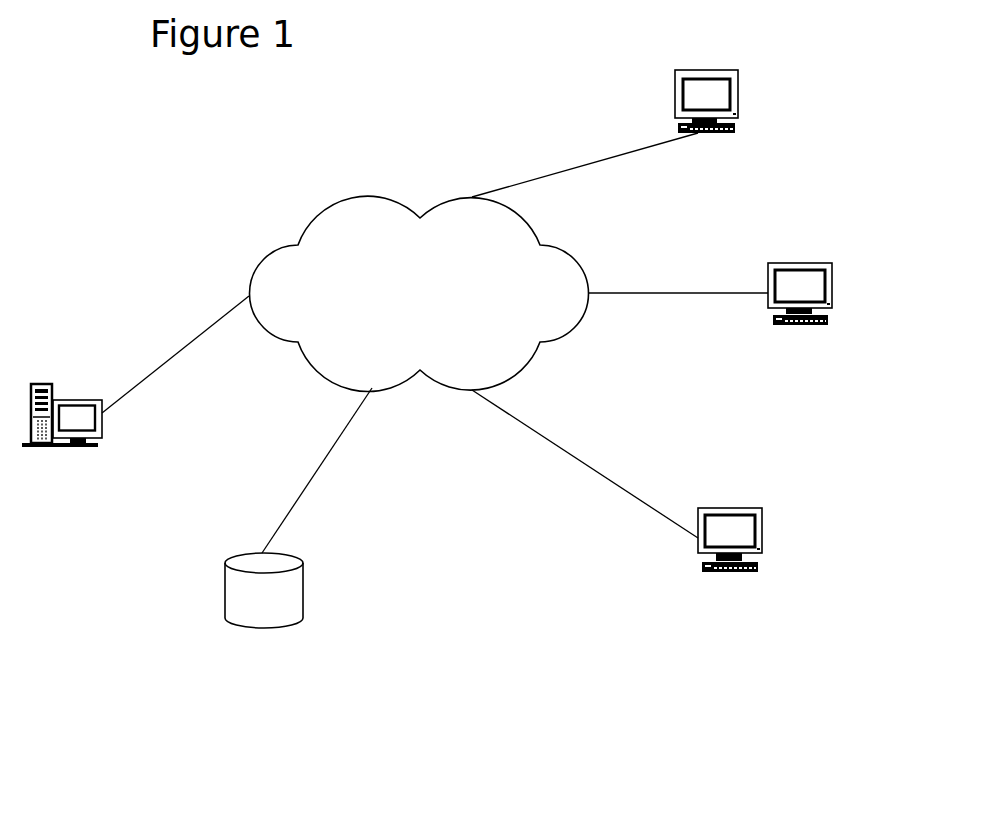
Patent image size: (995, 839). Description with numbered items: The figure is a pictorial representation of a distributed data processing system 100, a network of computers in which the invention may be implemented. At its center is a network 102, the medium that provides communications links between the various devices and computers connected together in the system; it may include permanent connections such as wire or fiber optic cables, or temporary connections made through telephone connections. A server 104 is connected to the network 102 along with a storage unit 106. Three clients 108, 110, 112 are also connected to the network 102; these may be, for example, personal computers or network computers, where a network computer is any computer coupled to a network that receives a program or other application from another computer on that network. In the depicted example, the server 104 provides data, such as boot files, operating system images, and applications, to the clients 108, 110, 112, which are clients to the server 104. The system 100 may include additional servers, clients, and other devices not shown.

The distributed data processing system 100 is at (454, 644).
The network 102 is at (436, 302).
The server 104 is at (77, 400).
The storage unit 106 is at (263, 628).
The client 108 is at (707, 70).
The client 110 is at (802, 263).
The client 112 is at (730, 572).